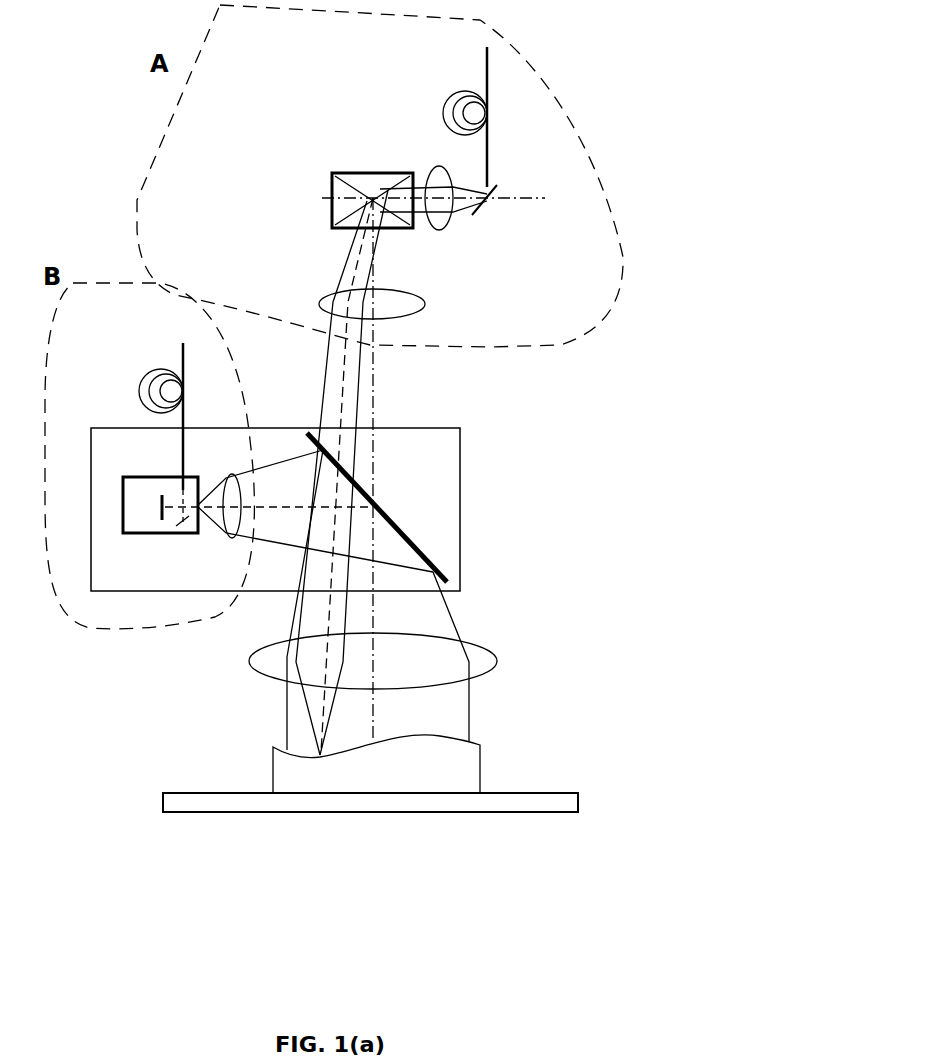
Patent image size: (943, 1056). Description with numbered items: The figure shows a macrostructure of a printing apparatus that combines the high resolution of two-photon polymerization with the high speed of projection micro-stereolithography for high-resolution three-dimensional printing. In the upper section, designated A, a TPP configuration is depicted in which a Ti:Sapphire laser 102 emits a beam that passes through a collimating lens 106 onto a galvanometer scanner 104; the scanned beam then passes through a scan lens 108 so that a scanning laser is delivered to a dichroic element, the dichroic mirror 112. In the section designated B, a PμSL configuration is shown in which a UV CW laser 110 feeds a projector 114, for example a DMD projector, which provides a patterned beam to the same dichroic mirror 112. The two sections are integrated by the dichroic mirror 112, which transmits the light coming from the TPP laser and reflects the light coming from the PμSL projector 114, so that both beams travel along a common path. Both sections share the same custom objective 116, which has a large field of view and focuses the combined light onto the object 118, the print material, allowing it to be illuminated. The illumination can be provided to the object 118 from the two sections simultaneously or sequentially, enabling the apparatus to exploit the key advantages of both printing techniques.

The Ti:Sapphire laser 102 is at (487, 68).
The galvanometer scanner 104 is at (317, 191).
The collimating lens 106 is at (440, 234).
The scan lens 108 is at (340, 308).
The UV CW laser 110 is at (182, 352).
The dichroic mirror 112 is at (420, 542).
The projector 114 is at (173, 565).
The objective 116 is at (316, 661).
The object 118 is at (452, 767).